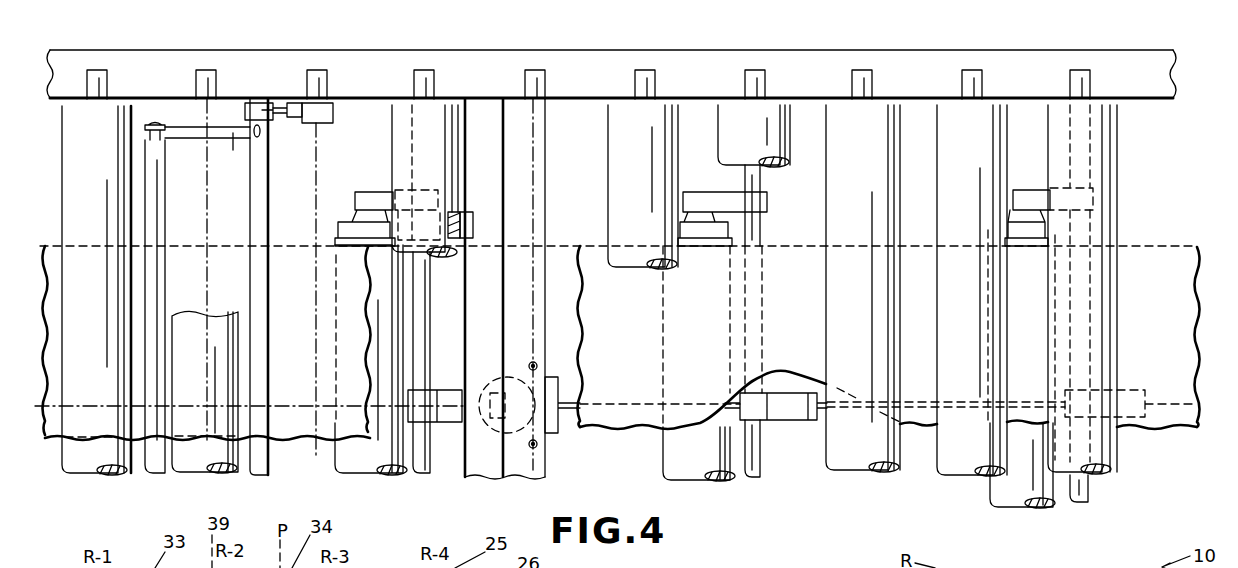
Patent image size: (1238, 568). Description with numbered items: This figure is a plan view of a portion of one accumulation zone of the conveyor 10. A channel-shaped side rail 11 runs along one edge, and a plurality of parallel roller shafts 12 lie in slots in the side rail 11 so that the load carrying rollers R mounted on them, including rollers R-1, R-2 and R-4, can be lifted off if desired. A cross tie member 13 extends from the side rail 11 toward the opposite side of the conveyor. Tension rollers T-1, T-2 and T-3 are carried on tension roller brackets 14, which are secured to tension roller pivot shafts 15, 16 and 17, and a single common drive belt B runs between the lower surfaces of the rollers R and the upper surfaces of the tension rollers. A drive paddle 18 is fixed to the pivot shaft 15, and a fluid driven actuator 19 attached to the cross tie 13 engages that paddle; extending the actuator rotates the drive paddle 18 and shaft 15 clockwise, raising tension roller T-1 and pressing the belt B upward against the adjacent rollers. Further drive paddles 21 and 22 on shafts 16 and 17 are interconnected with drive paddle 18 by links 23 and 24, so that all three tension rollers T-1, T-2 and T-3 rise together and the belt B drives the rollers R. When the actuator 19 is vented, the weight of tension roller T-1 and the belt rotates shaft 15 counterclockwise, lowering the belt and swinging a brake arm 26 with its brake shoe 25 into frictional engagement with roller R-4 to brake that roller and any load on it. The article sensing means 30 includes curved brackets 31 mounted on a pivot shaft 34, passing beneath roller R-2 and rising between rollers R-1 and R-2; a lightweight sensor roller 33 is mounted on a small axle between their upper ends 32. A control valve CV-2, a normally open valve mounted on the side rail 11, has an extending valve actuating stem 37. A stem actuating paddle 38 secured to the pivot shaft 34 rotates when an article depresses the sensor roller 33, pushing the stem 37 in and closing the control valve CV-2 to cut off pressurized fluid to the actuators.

The conveyor 10 is at (1197, 183).
The side rail 11 is at (597, 62).
The roller shaft 12 is at (93, 70).
The cross tie member 13 is at (516, 468).
The tension roller bracket 14 is at (360, 198).
The tension roller pivot shaft 15 is at (419, 472).
The tension roller pivot shaft 16 is at (766, 470).
The tension roller pivot shaft 17 is at (1090, 495).
The drive paddle 18 is at (452, 395).
The fluid driven actuator 19 is at (525, 350).
The drive paddle 21 is at (793, 413).
The drive paddle 22 is at (1160, 380).
The link 23 is at (615, 403).
The link 24 is at (943, 402).
The brake shoe 25 is at (458, 212).
The brake arm 26 is at (477, 238).
The article sensing means 30 is at (173, 102).
The curved bracket 31 is at (223, 136).
The upper end of curved bracket 32 is at (143, 129).
The sensor roller 33 is at (166, 234).
The pivot shaft 34 is at (270, 462).
The valve actuating stem 37 is at (281, 122).
The control valve stem actuating paddle 38 is at (267, 103).
The drive belt B is at (55, 272).
The load carrying roller R is at (835, 135).
The load carrying roller R-1 is at (87, 466).
The load carrying roller R-2 is at (202, 462).
The load carrying roller R-4 is at (397, 117).
The tension roller T-1 is at (362, 472).
The tension roller T-2 is at (694, 474).
The tension roller T-3 is at (1020, 492).
The control valve CV-2 is at (325, 104).